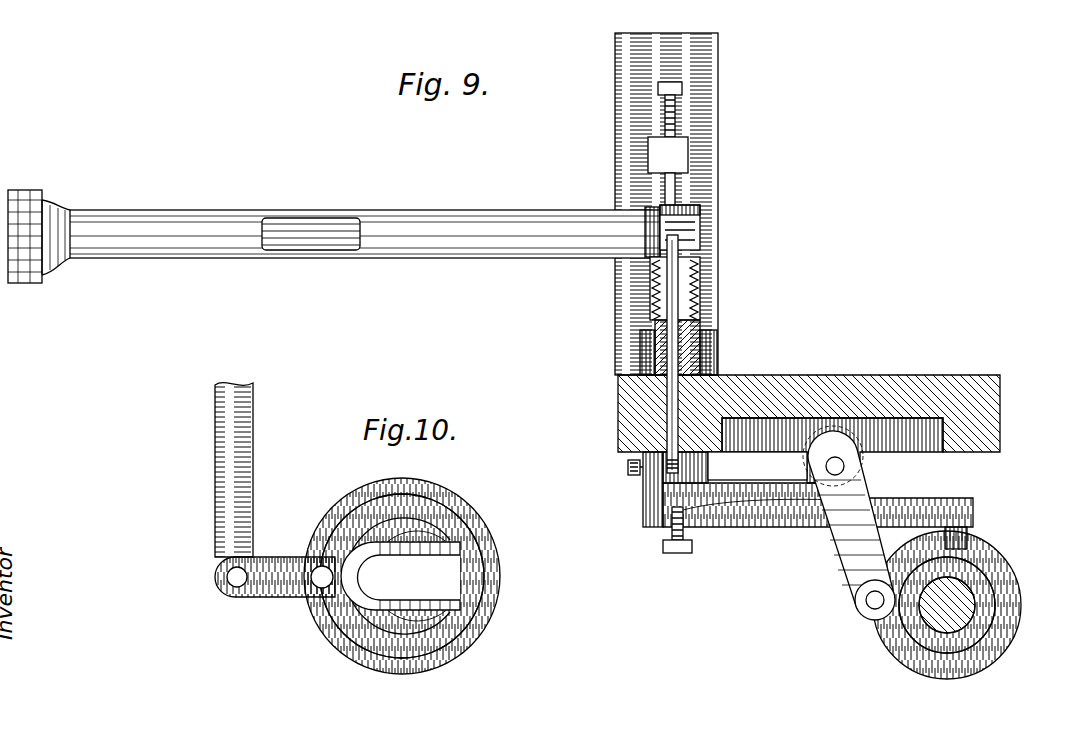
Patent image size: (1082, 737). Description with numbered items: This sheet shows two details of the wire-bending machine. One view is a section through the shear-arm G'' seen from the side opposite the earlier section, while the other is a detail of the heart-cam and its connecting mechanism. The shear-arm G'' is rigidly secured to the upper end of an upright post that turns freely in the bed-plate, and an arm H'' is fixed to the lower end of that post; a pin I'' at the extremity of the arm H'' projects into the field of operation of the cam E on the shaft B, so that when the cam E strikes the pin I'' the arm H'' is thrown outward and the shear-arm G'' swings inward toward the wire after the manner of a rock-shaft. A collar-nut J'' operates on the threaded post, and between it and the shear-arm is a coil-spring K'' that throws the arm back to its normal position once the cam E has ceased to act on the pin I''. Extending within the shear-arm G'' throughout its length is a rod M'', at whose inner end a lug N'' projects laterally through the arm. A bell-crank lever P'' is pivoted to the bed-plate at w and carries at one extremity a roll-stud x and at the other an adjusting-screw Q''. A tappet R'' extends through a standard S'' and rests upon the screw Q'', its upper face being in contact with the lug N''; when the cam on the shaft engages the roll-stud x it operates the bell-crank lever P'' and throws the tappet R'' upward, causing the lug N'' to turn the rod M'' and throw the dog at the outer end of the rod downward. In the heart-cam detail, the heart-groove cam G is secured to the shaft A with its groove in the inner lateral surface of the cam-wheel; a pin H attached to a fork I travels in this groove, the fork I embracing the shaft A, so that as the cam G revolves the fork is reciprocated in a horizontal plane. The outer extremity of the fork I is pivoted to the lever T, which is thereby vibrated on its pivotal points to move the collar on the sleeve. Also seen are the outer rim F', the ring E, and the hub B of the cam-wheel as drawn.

In FIG. 9, the rod M'' is at (317, 198).
In FIG. 9, the shear-arm G'' is at (334, 254).
In FIG. 9, the lug N'' is at (713, 225).
In FIG. 9, the coil-spring K'' is at (710, 278).
In FIG. 9, the collar-nut J'' is at (705, 335).
In FIG. 9, the tappet R'' is at (738, 352).
In FIG. 9, the standard S'' is at (610, 364).
In FIG. 9, the pivot w is at (795, 453).
In FIG. 9, the bell-crank lever P'' is at (832, 452).
In FIG. 9, the adjusting-screw Q'' is at (672, 556).
In FIG. 9, the arm H'' is at (818, 532).
In FIG. 9, the pin I'' is at (975, 526).
In FIG. 9, the wheel rim F' is at (965, 605).
In FIG. 9, the cam E is at (1017, 598).
In FIG. 9, the shaft B is at (1000, 617).
In FIG. 9, the roll-stud x is at (870, 623).
In FIG. 10, the lever T is at (247, 462).
In FIG. 10, the pin H is at (298, 554).
In FIG. 10, the fork I is at (275, 591).
In FIG. 10, the heart-groove cam G is at (416, 548).
In FIG. 10, the shaft A is at (503, 600).